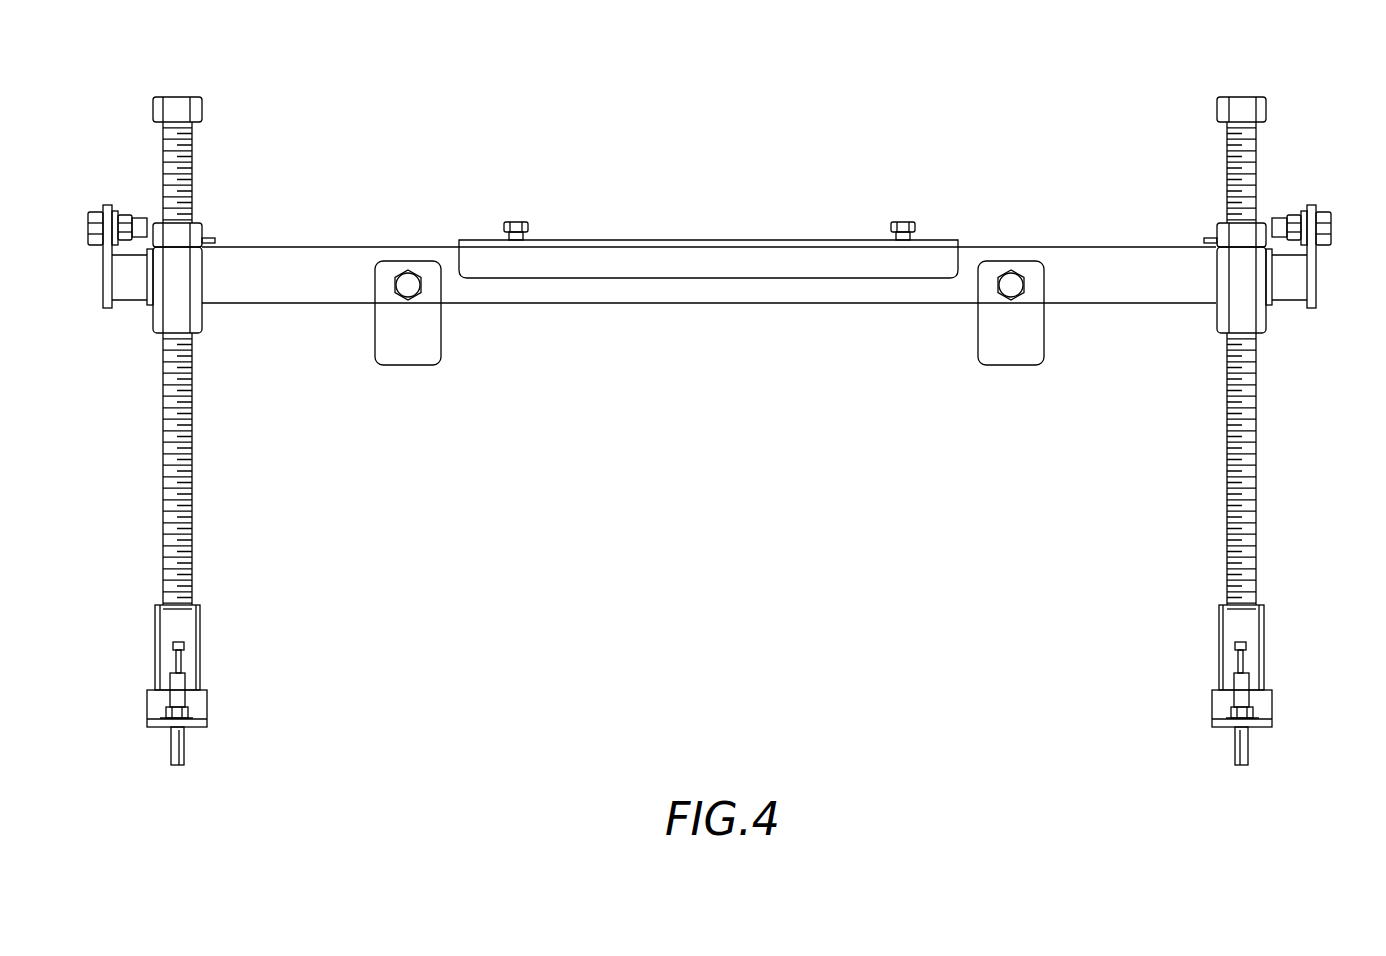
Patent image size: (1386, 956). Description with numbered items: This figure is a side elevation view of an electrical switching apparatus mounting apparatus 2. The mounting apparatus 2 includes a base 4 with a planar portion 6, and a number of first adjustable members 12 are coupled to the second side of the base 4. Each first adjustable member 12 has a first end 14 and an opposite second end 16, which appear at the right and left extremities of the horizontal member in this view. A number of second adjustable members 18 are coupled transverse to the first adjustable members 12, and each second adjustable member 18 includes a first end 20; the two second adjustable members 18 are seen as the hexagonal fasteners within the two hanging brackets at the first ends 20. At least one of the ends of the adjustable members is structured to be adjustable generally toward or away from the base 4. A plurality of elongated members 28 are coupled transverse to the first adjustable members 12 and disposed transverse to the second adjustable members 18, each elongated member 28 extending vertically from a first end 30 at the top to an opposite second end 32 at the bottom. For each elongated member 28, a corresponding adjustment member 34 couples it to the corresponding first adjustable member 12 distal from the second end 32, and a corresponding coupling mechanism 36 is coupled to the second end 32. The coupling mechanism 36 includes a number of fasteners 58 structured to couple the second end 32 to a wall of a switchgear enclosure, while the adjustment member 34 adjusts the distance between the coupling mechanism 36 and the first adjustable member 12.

The electrical switching apparatus mounting apparatus 2 is at (716, 493).
The base 4 is at (708, 229).
The planar portion 6 is at (718, 240).
The first adjustable member 12 is at (1087, 262).
The first end 14 is at (1316, 286).
The opposite second end 16 is at (103, 286).
The second adjustable member 18 is at (426, 343).
The first end 20 is at (385, 345).
The elongated member 28 is at (155, 468).
The first end 30 is at (178, 96).
The opposite second end 32 is at (198, 728).
The adjustment member 34 is at (160, 318).
The coupling mechanism 36 is at (203, 705).
The fastener 58 is at (175, 760).